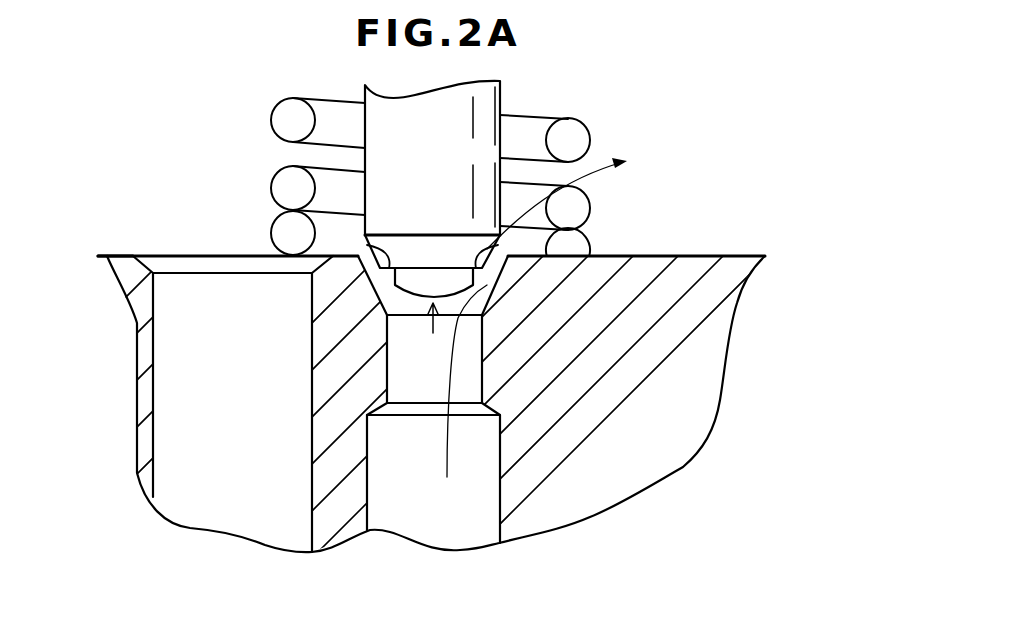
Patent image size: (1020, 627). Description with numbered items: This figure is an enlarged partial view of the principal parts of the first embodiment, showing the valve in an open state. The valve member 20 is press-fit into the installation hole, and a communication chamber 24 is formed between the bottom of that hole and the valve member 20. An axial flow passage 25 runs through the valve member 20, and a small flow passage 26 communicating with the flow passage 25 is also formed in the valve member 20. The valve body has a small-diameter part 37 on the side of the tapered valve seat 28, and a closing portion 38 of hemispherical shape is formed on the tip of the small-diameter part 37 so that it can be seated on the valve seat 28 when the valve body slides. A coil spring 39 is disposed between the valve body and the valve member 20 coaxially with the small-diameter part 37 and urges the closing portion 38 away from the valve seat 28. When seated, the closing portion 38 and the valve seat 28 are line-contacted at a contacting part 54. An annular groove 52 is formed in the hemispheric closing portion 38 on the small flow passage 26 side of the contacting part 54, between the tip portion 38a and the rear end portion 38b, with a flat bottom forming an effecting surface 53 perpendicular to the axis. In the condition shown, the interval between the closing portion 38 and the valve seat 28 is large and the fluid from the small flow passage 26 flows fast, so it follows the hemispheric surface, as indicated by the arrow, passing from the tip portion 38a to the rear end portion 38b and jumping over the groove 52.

The valve member 20 is at (690, 280).
The communication chamber 24 is at (785, 114).
The flow passage 25 is at (498, 502).
The small flow passage 26 is at (470, 388).
The valve seat 28 is at (292, 243).
The small-diameter part 37 is at (468, 152).
The closing portion 38 is at (390, 293).
The tip portion 38a is at (503, 284).
The rear end portion 38b is at (487, 250).
The coil spring 39 is at (290, 122).
The groove 52 is at (497, 290).
The effecting surface 53 is at (500, 293).
The contacting part 54 is at (505, 283).